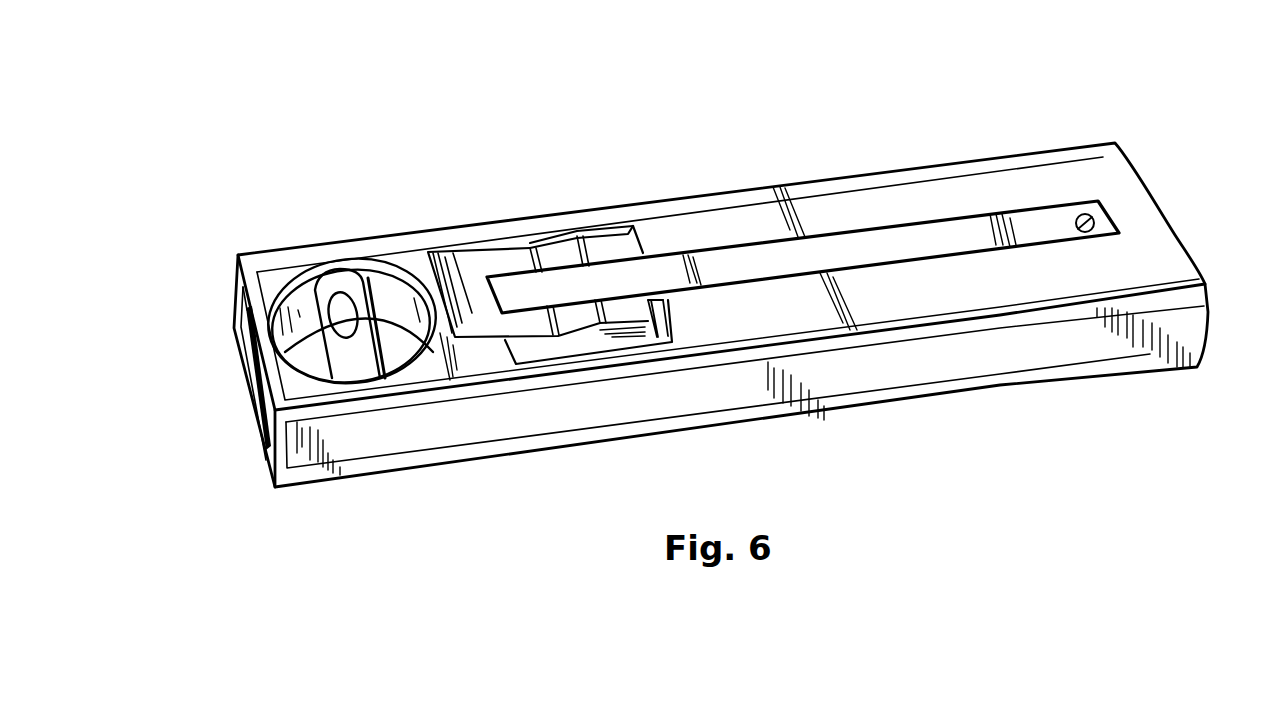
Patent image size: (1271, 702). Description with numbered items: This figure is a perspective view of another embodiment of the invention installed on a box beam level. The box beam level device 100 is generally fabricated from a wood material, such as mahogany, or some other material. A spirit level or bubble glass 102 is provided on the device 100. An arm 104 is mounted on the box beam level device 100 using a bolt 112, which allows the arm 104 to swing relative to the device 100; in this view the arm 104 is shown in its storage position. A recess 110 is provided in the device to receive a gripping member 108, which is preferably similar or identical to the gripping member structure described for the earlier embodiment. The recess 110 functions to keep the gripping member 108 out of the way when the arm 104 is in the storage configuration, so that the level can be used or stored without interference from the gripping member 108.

The box beam level device 100 is at (843, 377).
The spirit level 102 is at (328, 346).
The arm 104 is at (748, 262).
The gripping member 108 is at (476, 265).
The recess 110 is at (680, 311).
The bolt 112 is at (1077, 216).